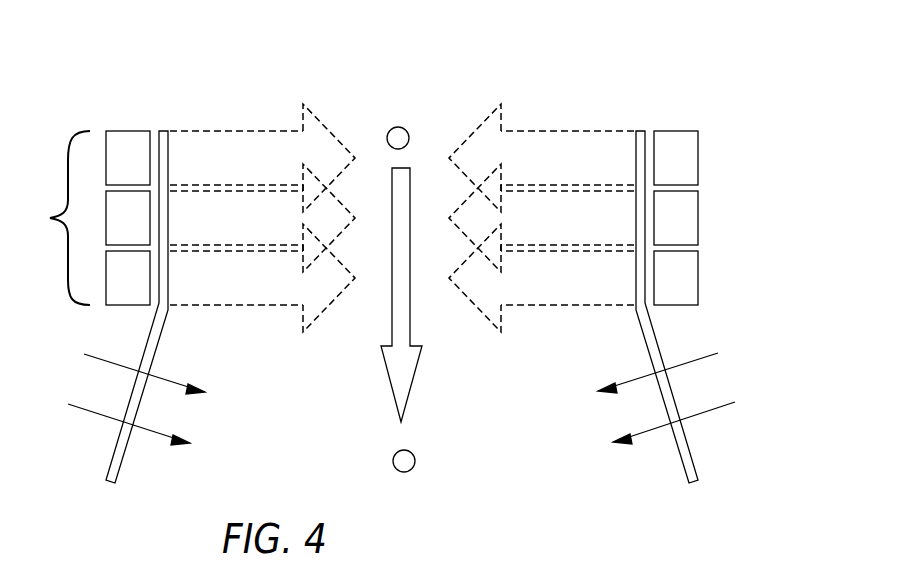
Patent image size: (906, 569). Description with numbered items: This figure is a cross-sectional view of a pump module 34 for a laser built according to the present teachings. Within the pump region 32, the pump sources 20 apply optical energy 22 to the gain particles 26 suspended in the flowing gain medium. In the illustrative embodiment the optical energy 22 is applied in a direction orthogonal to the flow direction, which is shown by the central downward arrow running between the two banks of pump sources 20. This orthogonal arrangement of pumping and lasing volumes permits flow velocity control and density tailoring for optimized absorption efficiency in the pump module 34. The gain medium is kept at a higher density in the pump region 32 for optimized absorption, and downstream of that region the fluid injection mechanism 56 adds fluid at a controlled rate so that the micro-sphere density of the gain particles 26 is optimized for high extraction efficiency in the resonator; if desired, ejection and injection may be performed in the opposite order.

The pump source 20 is at (128, 130).
The optical energy 22 is at (551, 146).
The gain particles 26 is at (387, 140).
The pump region 32 is at (42, 228).
The pump module 34 is at (636, 67).
The fluid injection mechanism 56 is at (86, 354).